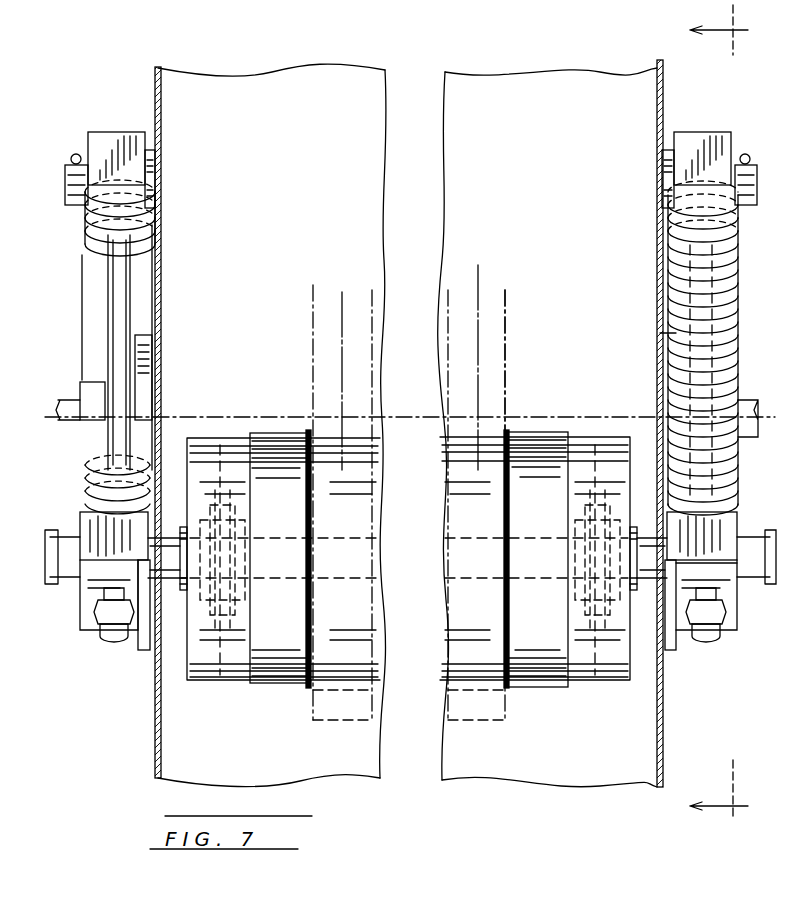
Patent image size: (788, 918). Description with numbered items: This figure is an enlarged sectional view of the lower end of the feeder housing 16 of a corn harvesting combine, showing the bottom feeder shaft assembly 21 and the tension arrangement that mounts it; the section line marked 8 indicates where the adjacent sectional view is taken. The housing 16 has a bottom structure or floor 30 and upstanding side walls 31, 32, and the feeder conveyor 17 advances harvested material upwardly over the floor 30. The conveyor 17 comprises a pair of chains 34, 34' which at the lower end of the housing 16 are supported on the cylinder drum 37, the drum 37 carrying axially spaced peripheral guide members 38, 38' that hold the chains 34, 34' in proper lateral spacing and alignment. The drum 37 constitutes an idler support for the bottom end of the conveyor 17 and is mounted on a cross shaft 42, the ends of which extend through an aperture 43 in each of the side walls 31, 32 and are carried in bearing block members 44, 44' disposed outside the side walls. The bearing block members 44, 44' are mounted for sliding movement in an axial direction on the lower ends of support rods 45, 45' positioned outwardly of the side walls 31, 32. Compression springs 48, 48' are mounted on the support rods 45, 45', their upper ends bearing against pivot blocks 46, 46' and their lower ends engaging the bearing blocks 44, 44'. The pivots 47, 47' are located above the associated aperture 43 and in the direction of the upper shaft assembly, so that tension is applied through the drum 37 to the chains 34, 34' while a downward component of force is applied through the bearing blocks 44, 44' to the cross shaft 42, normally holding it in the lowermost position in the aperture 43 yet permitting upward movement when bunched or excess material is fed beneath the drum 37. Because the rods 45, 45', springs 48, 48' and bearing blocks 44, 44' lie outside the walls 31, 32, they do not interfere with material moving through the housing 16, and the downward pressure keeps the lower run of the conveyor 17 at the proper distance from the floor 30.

The section line 8- 8 is at (722, 424).
The feeder housing 16 is at (663, 72).
The feeder conveyor 17 is at (511, 330).
The bottom feeder shaft assembly 21 is at (264, 698).
The bottom structure 30 is at (346, 82).
The side wall 31 is at (656, 105).
The side wall 32 is at (162, 115).
The chain 34 is at (498, 362).
The chain 34' is at (343, 376).
The cylinder drum 37 is at (546, 678).
The peripheral guide member 38 is at (523, 575).
The peripheral guide member 38' is at (292, 573).
The cross shaft 42 is at (172, 545).
The aperture 43 is at (160, 596).
The bearing block member 44 is at (722, 573).
The bearing block member 44' is at (92, 548).
The support rod 45 is at (716, 372).
The support rod 45' is at (99, 347).
The pivot block 46 is at (696, 150).
The pivot block 46' is at (119, 147).
The pivot 47 is at (750, 158).
The pivot 47' is at (59, 175).
The compression spring 48 is at (721, 348).
The compression spring 48' is at (97, 218).